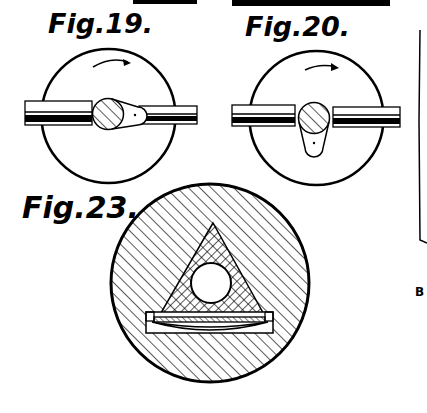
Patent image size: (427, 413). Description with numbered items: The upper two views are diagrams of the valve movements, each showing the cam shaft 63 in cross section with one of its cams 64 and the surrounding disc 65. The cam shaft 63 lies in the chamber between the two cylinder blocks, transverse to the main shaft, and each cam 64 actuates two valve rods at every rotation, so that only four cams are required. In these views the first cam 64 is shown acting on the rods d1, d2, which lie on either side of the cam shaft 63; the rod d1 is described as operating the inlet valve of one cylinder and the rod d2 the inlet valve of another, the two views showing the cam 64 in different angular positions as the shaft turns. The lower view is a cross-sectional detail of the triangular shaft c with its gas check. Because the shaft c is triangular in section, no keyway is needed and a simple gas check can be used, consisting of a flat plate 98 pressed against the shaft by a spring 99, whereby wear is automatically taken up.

In FIG. 19, the disk 65 is at (168, 74).
In FIG. 20, the disk 65 is at (347, 168).
In FIG. 19, the cam 64 is at (133, 108).
In FIG. 20, the cam 64 is at (319, 143).
In FIG. 19, the cam shaft 63 is at (108, 130).
In FIG. 20, the cam shaft 63 is at (322, 109).
In FIG. 19, the valve rod d1 is at (67, 108).
In FIG. 20, the valve rod d1 is at (271, 116).
In FIG. 19, the valve rod d2 is at (183, 109).
In FIG. 20, the valve rod d2 is at (379, 117).
In FIG. 23, the shaft c is at (228, 251).
In FIG. 23, the flat plate 98 is at (150, 322).
In FIG. 23, the spring 99 is at (223, 337).